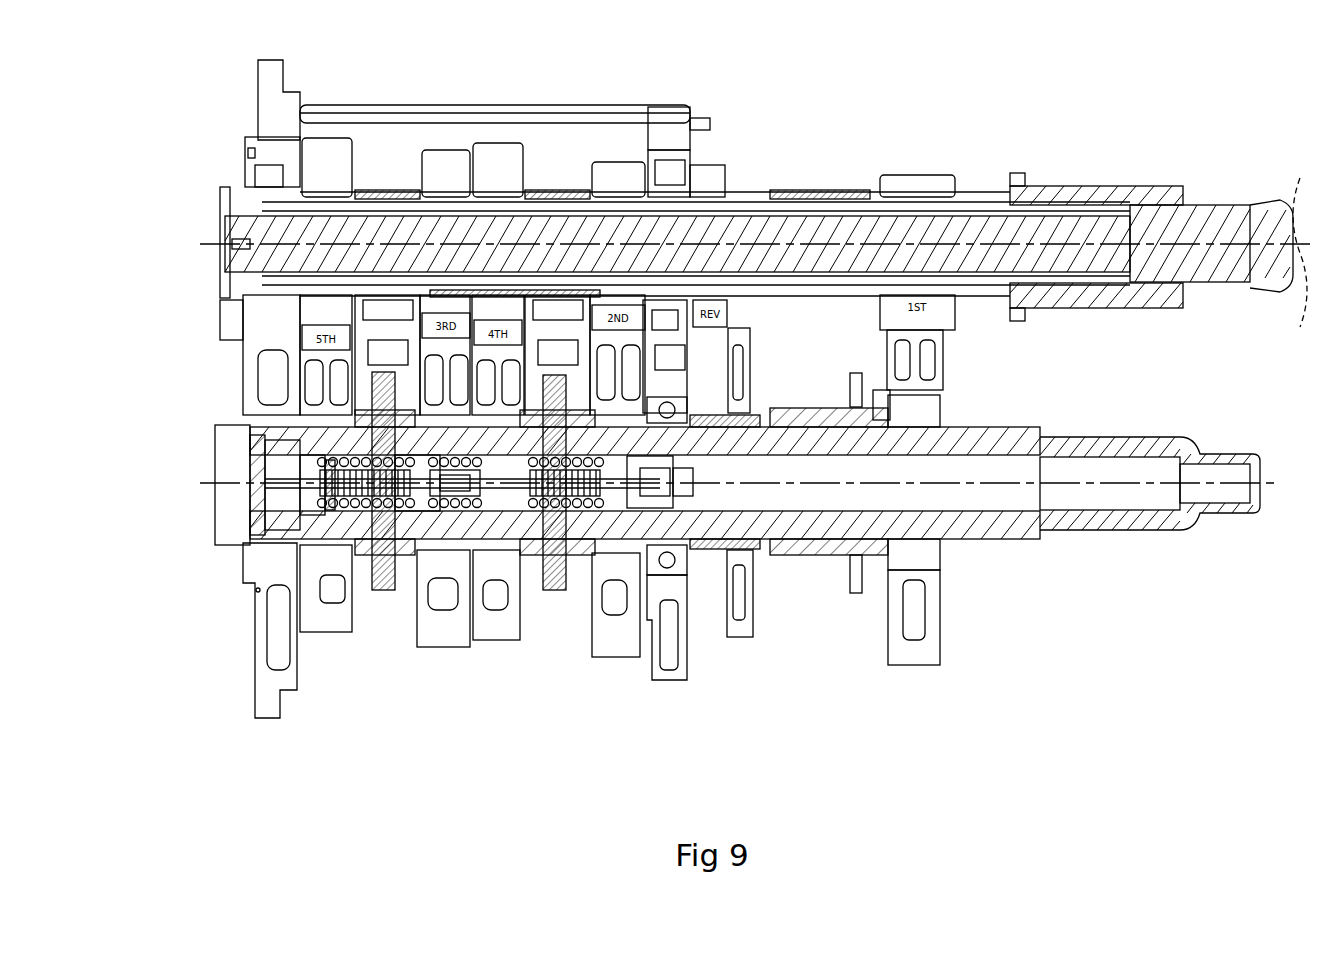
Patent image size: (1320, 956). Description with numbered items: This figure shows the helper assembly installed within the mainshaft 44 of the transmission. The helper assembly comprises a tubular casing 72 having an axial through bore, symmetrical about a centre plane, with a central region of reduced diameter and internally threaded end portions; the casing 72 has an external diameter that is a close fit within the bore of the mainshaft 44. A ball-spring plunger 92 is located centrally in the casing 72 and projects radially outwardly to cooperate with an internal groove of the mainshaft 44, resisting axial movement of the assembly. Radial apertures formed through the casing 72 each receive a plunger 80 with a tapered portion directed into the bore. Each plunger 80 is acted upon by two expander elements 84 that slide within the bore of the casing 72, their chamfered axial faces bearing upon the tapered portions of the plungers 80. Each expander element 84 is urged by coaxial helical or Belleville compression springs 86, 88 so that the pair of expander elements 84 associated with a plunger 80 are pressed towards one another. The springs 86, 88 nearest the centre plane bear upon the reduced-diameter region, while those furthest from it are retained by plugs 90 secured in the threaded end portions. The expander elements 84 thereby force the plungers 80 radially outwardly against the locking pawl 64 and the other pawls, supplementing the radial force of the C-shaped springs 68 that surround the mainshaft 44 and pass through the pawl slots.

The mainshaft 44 is at (1003, 543).
The locking pawl 64 is at (400, 515).
The C-shaped spring 68 is at (385, 520).
The tubular casing 72 is at (585, 515).
The plunger 80 is at (567, 443).
The expander element 84 is at (370, 450).
The compression spring 86 is at (312, 500).
The compression spring 88 is at (320, 474).
The plug 90 is at (325, 493).
The ball-spring plunger 92 is at (473, 510).